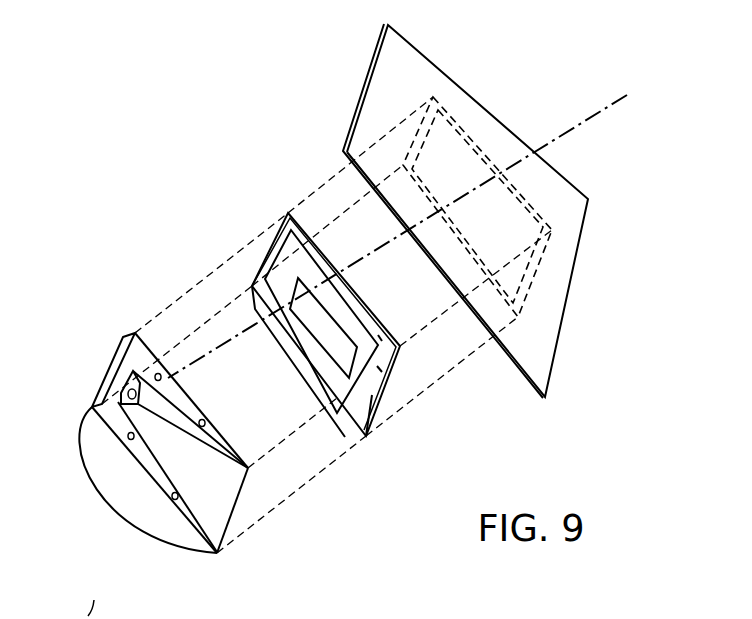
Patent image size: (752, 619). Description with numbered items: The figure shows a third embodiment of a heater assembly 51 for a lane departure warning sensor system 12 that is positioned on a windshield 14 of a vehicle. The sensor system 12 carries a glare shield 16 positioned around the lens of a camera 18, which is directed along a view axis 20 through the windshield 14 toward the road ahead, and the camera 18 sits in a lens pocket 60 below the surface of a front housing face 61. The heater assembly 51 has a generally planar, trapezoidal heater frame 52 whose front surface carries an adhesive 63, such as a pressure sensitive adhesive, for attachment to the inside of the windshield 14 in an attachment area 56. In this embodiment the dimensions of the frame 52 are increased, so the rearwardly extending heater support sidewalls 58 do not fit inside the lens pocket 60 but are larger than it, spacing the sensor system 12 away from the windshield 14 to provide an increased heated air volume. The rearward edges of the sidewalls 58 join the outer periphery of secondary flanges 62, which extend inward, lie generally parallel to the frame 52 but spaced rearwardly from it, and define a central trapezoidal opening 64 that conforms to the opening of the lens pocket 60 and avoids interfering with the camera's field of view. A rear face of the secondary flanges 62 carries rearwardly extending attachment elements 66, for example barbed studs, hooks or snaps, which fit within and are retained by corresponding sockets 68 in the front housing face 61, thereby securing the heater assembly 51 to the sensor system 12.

The lane departure warning sensor system 12 is at (178, 430).
The windshield 14 is at (407, 63).
The glare shield 16 is at (214, 509).
The camera 18 is at (122, 372).
The view axis 20 is at (591, 117).
The heater assembly 51 is at (316, 305).
The heater frame 52 is at (290, 287).
The attachment area 56 is at (551, 256).
The heater support sidewalls 58 is at (378, 337).
The lens pocket 60 is at (223, 480).
The front housing face 61 is at (138, 330).
The secondary flanges 62 is at (372, 395).
The adhesive 63 is at (292, 212).
The central trapezoidal opening 64 is at (355, 345).
The attachment elements 66 is at (286, 358).
The sockets 68 is at (205, 423).